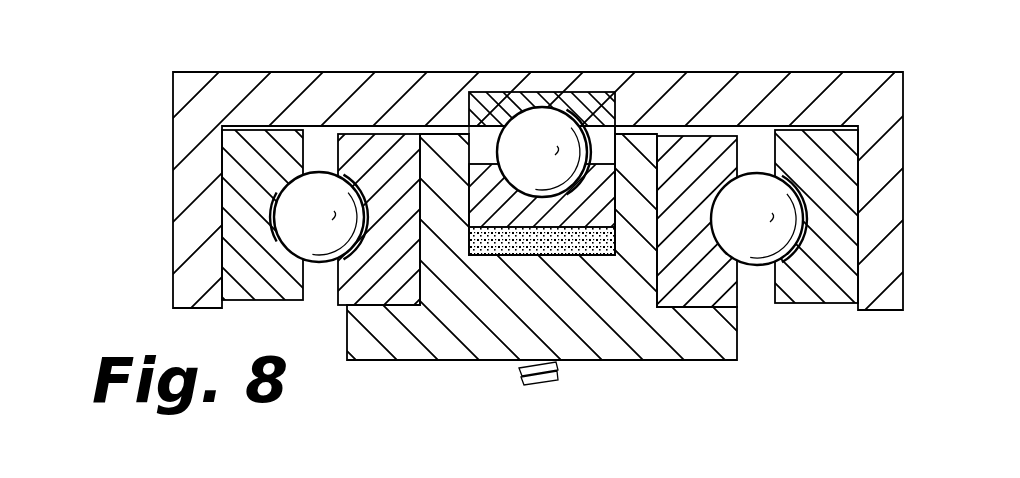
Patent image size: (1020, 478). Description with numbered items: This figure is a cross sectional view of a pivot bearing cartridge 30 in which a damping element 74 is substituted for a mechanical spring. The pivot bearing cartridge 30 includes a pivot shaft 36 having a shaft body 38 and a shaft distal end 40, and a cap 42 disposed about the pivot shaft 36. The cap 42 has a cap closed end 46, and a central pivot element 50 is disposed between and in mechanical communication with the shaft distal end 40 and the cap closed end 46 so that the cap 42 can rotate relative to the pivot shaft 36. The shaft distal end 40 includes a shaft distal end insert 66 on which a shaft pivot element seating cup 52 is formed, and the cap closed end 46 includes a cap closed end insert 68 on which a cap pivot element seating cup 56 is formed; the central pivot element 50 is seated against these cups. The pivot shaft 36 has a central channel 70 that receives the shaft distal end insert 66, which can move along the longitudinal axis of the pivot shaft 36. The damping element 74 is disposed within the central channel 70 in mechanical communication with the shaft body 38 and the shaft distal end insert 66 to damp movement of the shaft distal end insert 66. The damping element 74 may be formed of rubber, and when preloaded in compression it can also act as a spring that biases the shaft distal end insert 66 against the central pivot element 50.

The pivot bearing cartridge 30 is at (140, 78).
The pivot shaft 36 is at (517, 332).
The shaft body 38 is at (588, 260).
The shaft distal end 40 is at (642, 153).
The cap 42 is at (738, 85).
The cap closed end 46 is at (672, 88).
The central pivot element 50 is at (541, 124).
The shaft pivot element seating cup 52 is at (501, 186).
The cap pivot element seating cup 56 is at (504, 104).
The shaft distal end insert 66 is at (593, 197).
The cap closed end insert 68 is at (583, 96).
The central channel 70 is at (593, 200).
The damping element 74 is at (478, 252).